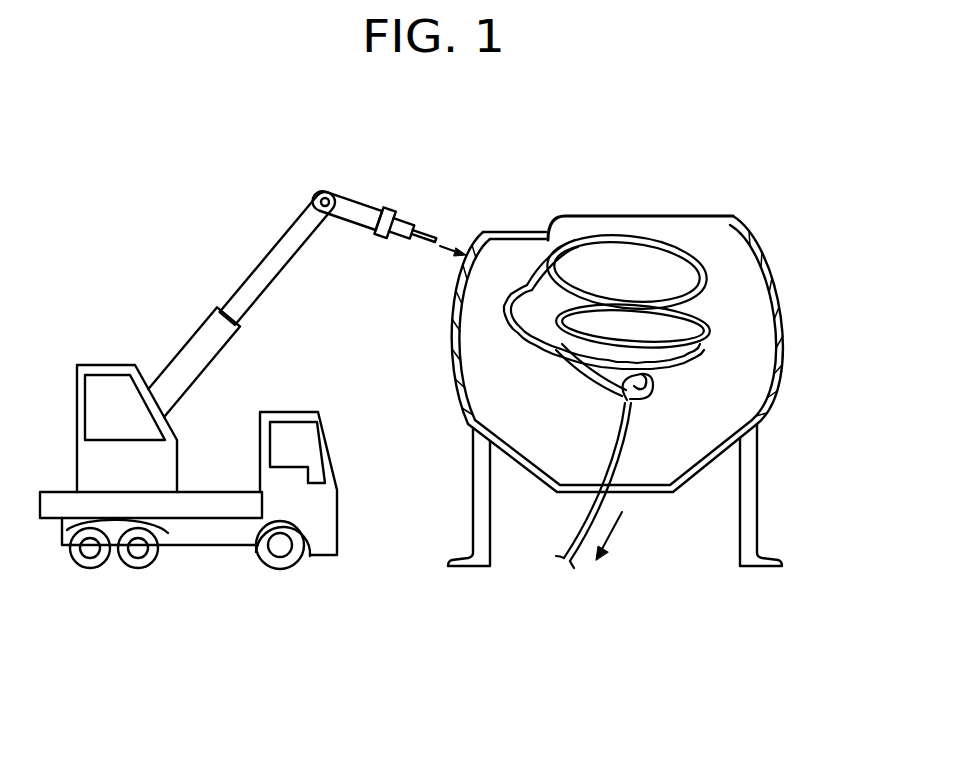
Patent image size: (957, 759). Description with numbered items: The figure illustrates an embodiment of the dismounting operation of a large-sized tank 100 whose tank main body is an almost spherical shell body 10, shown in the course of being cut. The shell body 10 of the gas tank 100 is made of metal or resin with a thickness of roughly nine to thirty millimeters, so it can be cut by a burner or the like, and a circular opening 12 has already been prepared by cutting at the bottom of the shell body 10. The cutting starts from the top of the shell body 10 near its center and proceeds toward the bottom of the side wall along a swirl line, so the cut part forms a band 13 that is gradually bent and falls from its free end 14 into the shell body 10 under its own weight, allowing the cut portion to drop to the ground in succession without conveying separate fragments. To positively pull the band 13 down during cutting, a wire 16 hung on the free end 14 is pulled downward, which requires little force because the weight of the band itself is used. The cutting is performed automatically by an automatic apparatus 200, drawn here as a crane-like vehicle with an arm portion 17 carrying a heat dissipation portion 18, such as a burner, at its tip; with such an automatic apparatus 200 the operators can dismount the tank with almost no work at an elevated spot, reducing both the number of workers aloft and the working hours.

The large-sized tank 100 is at (663, 384).
The shell body 10 is at (780, 367).
The circular opening 12 is at (657, 494).
The band 13 is at (650, 240).
The free end 14 is at (653, 393).
The wire 16 is at (578, 514).
The arm portion 17 is at (260, 285).
The heat dissipation portion 18 is at (428, 237).
The automatic apparatus 200 is at (252, 351).